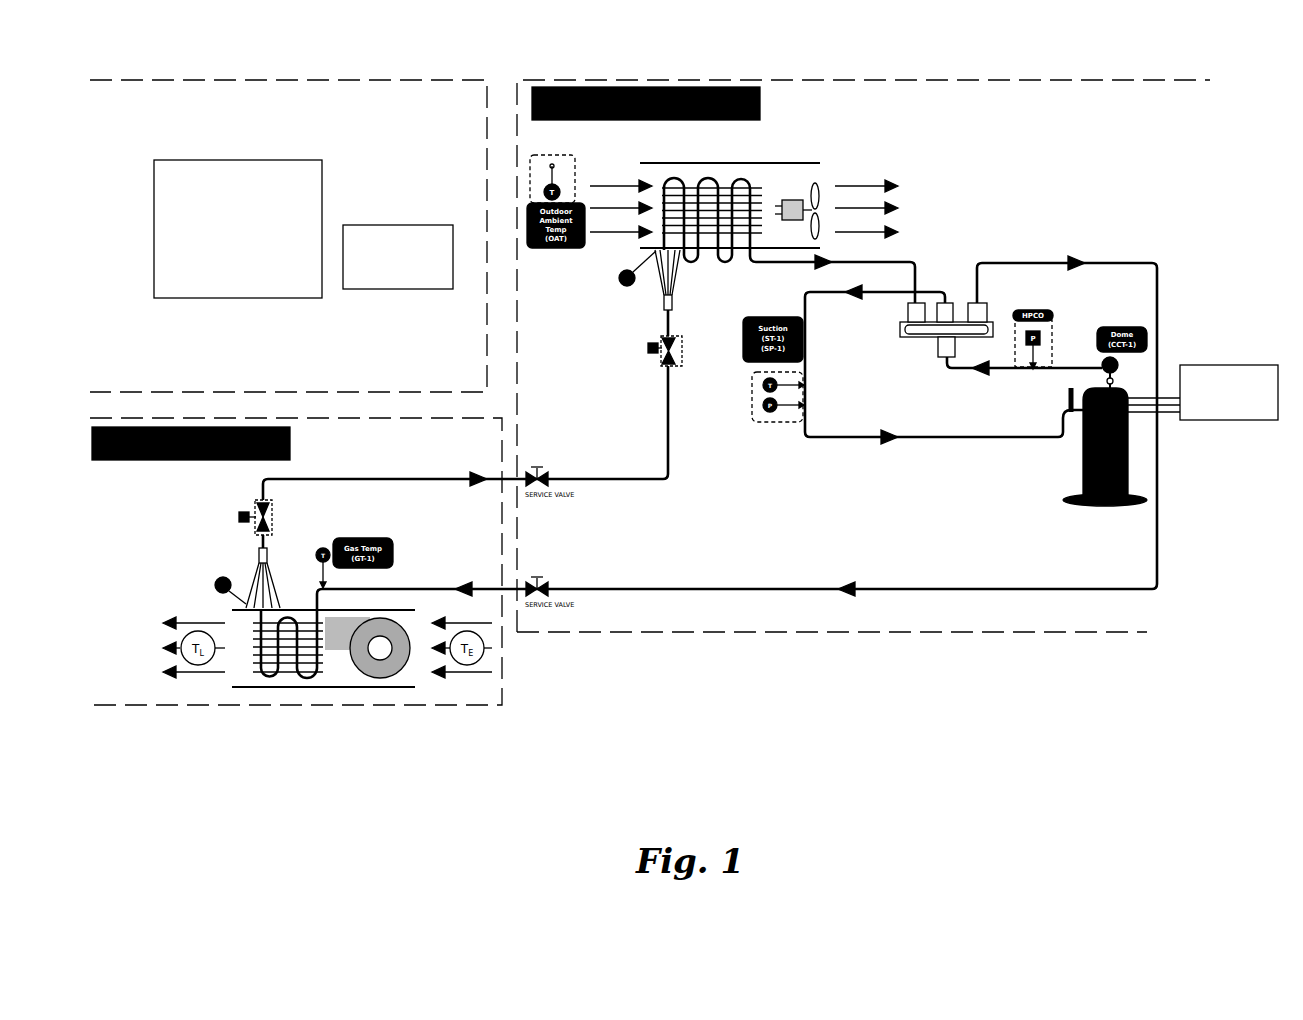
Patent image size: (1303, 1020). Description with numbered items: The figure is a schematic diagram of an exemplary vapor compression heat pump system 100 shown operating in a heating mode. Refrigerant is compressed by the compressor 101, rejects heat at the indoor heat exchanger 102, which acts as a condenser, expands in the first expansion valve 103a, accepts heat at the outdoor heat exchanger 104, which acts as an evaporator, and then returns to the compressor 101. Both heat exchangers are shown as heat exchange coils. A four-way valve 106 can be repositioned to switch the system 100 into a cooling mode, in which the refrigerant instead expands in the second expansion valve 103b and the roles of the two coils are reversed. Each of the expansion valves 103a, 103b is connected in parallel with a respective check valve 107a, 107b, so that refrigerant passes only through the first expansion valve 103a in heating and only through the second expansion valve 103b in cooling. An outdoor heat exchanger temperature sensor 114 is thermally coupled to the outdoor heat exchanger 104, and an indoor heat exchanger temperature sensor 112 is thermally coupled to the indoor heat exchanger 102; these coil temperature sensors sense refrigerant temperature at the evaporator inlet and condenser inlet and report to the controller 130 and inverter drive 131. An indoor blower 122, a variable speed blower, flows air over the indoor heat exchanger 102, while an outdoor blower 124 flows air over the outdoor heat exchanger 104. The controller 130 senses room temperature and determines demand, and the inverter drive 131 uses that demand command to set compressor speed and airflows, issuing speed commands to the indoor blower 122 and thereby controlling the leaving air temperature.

The vapor compression heat pump system 100 is at (316, 48).
The compressor 101 is at (1093, 505).
The indoor heat exchanger 102 is at (272, 690).
The first expansion valve 103a is at (663, 356).
The second expansion valve 103b is at (253, 498).
The outdoor heat exchanger 104 is at (708, 173).
The four-way valve 106 is at (935, 336).
The check valve 107a is at (683, 353).
The check valve 107b is at (272, 521).
The indoor heat exchanger temperature sensor 112 is at (214, 584).
The outdoor heat exchanger temperature sensor 114 is at (621, 286).
The indoor blower 122 is at (388, 682).
The outdoor blower 124 is at (795, 197).
The controller 130 is at (256, 239).
The inverter drive 131 is at (1209, 364).